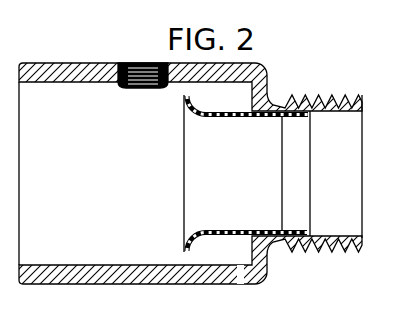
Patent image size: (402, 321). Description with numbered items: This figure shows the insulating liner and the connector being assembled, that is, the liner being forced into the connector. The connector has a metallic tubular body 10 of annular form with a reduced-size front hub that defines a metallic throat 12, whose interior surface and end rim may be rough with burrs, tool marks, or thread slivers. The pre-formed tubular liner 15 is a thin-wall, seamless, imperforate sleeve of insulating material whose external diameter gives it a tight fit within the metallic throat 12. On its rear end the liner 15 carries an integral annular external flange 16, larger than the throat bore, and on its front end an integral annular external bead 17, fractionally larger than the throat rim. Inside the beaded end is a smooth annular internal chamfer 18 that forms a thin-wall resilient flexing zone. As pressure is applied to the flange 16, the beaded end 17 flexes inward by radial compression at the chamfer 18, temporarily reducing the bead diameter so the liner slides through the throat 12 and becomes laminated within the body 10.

The metallic tubular body 10 is at (148, 272).
The metallic throat 12 is at (353, 223).
The tubular liner 15 is at (238, 236).
The annular external flange 16 is at (196, 252).
The annular external bead 17 is at (293, 278).
The annular internal chamfer 18 is at (314, 214).